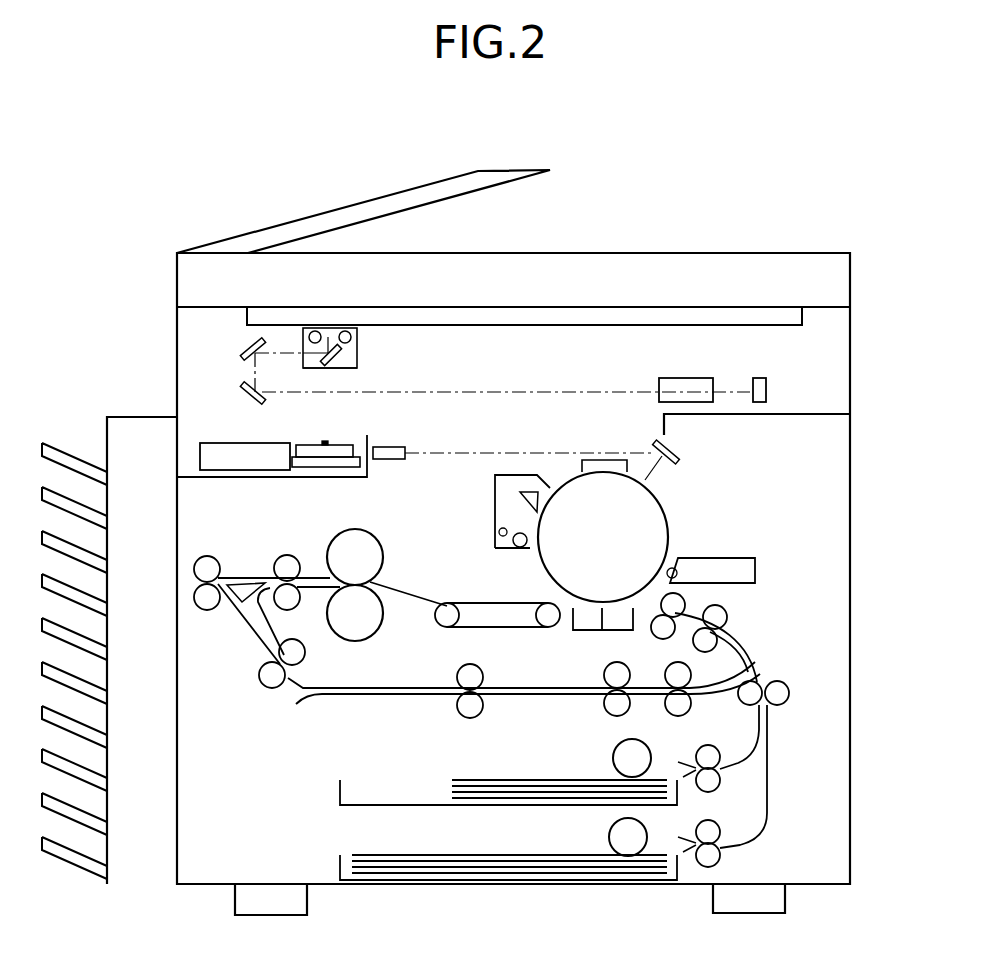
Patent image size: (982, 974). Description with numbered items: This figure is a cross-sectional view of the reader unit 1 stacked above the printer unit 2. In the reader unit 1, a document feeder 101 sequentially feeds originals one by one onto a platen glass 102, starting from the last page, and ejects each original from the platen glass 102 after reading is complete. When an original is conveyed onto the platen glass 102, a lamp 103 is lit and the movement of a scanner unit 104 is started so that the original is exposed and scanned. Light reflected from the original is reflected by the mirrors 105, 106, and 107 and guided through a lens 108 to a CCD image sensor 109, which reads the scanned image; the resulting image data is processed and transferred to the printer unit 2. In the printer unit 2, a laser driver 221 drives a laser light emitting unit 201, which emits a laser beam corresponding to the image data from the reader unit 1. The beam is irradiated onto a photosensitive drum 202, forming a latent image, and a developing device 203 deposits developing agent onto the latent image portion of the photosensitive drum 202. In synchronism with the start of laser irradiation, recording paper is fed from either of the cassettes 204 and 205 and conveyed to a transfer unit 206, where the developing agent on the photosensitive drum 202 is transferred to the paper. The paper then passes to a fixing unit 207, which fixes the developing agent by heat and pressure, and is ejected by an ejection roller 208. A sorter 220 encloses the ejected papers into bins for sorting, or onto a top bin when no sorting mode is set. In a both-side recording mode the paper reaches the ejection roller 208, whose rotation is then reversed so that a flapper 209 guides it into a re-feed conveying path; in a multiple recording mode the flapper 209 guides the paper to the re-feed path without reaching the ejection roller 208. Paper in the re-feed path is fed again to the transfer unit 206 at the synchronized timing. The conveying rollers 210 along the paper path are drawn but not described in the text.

The reader unit 1 is at (867, 428).
The printer unit 2 is at (867, 910).
The document feeder 101 is at (312, 215).
The platen glass 102 is at (604, 325).
The lamp 103 is at (353, 340).
The scanner unit 104 is at (358, 362).
The mirror 105 is at (334, 364).
The mirror 106 is at (243, 352).
The mirror 107 is at (243, 387).
The lens 108 is at (688, 378).
The CCD image sensor 109 is at (762, 378).
The laser light emitting unit 201 is at (320, 437).
The laser driver 221 is at (233, 478).
The photosensitive drum 202 is at (668, 510).
The developing device 203 is at (758, 560).
The cassette 204 is at (340, 793).
The cassette 205 is at (340, 868).
The transfer unit 206 is at (595, 632).
The fixing unit 207 is at (380, 540).
The ejection roller 208 is at (197, 592).
The flapper 209 is at (232, 612).
The conveying rollers 210 is at (503, 693).
The sorter 220 is at (132, 886).